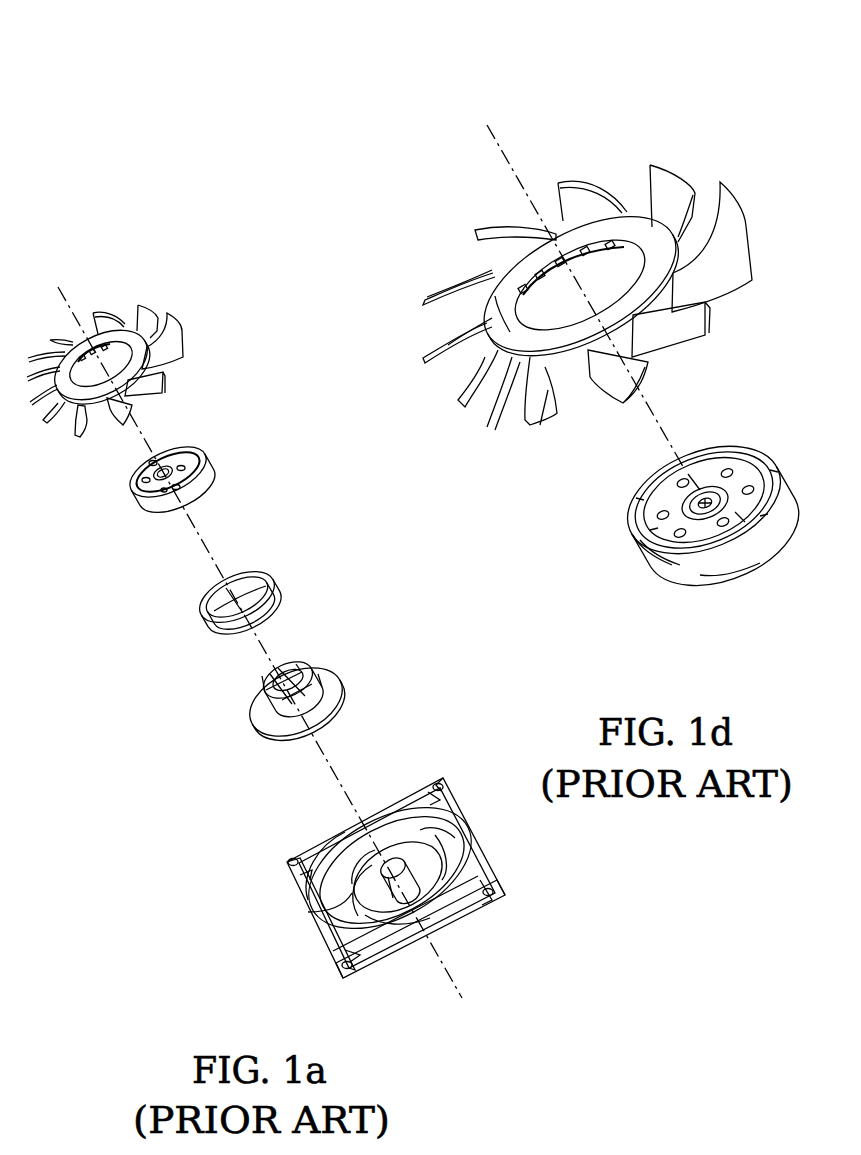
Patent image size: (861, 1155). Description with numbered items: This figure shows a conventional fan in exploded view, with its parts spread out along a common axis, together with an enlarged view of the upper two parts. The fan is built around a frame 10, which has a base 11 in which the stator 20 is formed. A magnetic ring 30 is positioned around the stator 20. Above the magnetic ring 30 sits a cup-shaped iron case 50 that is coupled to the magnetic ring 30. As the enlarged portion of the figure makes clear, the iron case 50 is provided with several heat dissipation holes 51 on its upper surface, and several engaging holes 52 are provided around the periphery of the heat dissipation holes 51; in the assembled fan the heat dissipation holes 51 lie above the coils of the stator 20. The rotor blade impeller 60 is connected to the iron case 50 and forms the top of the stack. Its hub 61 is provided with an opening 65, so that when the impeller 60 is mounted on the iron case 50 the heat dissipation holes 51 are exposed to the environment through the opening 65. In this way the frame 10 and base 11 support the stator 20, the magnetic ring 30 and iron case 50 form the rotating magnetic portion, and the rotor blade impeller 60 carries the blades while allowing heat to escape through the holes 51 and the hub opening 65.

In FIG. 1A, the frame 10 is at (300, 910).
In FIG. 1A, the base 11 is at (426, 797).
In FIG. 1A, the stator 20 is at (343, 657).
In FIG. 1A, the magnetic ring 30 is at (194, 627).
In FIG. 1A, the iron case 50 is at (125, 502).
In FIG. 1D, the iron case 50 is at (771, 435).
In FIG. 1D, the heat dissipation holes 51 is at (709, 570).
In FIG. 1D, the engaging holes 52 is at (648, 562).
In FIG. 1A, the rotor blade impeller 60 is at (159, 288).
In FIG. 1D, the rotor blade impeller 60 is at (714, 153).
In FIG. 1D, the hub 61 is at (511, 332).
In FIG. 1A, the opening 65 is at (110, 356).
In FIG. 1D, the opening 65 is at (592, 268).